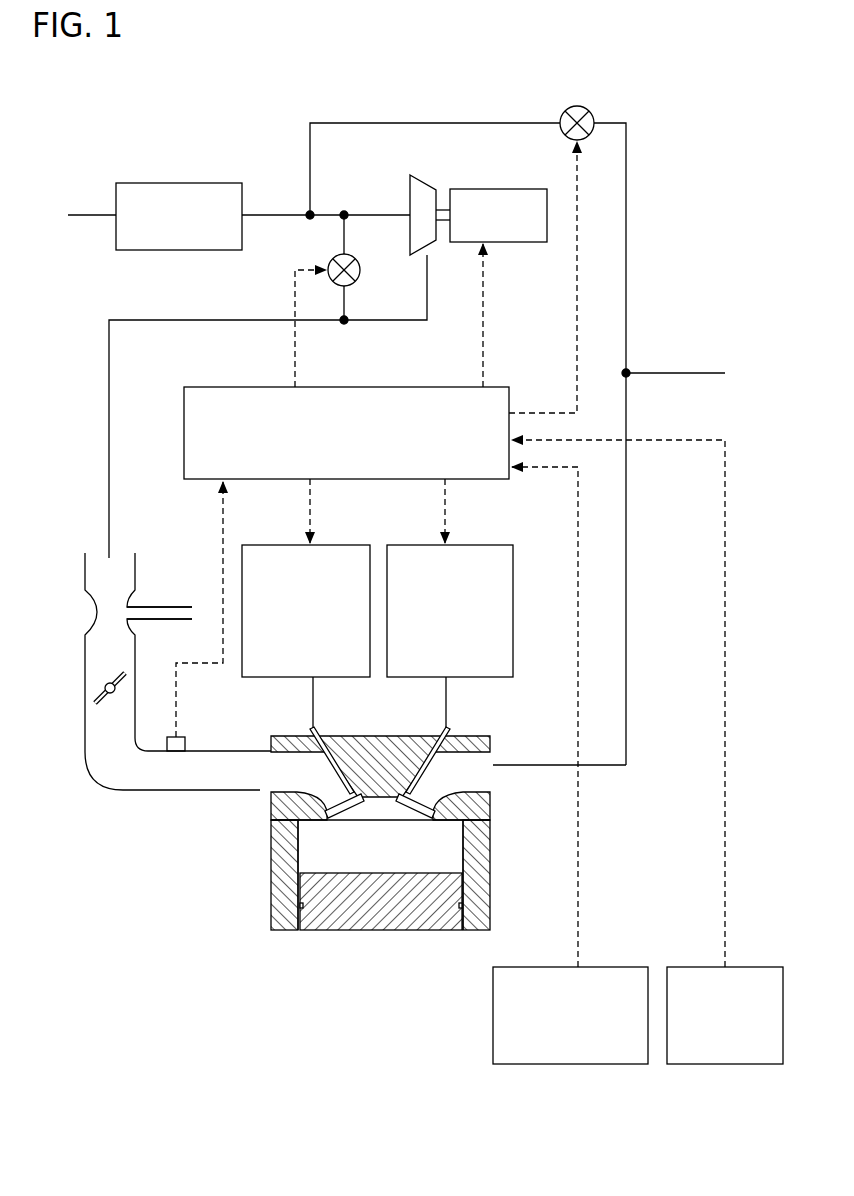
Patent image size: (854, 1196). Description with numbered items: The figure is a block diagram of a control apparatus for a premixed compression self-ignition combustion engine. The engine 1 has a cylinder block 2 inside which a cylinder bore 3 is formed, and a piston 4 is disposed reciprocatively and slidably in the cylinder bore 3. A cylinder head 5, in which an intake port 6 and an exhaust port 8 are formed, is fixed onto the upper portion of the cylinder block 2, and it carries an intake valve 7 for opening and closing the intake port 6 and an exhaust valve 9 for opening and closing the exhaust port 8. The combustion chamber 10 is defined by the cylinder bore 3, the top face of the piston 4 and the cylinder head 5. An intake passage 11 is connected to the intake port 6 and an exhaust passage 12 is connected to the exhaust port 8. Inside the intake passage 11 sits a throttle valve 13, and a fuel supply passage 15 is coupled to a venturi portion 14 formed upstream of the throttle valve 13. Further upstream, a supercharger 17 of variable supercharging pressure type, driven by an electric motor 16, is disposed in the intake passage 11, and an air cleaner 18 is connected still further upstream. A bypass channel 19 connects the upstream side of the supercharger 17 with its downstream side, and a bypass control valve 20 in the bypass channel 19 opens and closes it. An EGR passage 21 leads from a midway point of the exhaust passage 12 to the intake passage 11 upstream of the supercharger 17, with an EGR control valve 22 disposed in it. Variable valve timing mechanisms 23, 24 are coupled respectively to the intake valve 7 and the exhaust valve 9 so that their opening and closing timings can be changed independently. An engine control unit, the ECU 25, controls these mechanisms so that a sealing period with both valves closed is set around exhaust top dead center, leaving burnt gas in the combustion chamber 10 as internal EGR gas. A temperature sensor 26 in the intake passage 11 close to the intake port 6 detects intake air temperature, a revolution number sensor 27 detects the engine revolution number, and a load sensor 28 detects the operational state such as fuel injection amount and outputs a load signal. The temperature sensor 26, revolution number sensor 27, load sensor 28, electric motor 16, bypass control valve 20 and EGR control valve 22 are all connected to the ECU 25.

The engine 1 is at (355, 904).
The cylinder block 2 is at (275, 908).
The cylinder bore 3 is at (458, 835).
The piston 4 is at (425, 932).
The cylinder head 5 is at (387, 724).
The intake port 6 is at (285, 790).
The intake valve 7 is at (347, 817).
The exhaust port 8 is at (463, 792).
The exhaust valve 9 is at (415, 817).
The combustion chamber 10 is at (307, 846).
The intake passage 11 is at (105, 788).
The exhaust passage 12 is at (630, 668).
The throttle valve 13 is at (100, 686).
The venturi portion 14 is at (95, 612).
The fuel supply passage 15 is at (167, 604).
The electric motor 16 is at (498, 187).
The supercharger 17 is at (423, 178).
The air cleaner 18 is at (204, 182).
The bypass channel 19 is at (344, 237).
The bypass control valve 20 is at (360, 273).
The EGR passage 21 is at (628, 220).
The EGR control valve 22 is at (590, 112).
The variable valve timing mechanism 23 is at (330, 545).
The variable valve timing mechanism 24 is at (466, 545).
The engine control unit (ECU) 25 is at (398, 372).
The temperature sensor 26 is at (181, 736).
The revolution number sensor 27 is at (572, 1065).
The load sensor 28 is at (724, 1065).